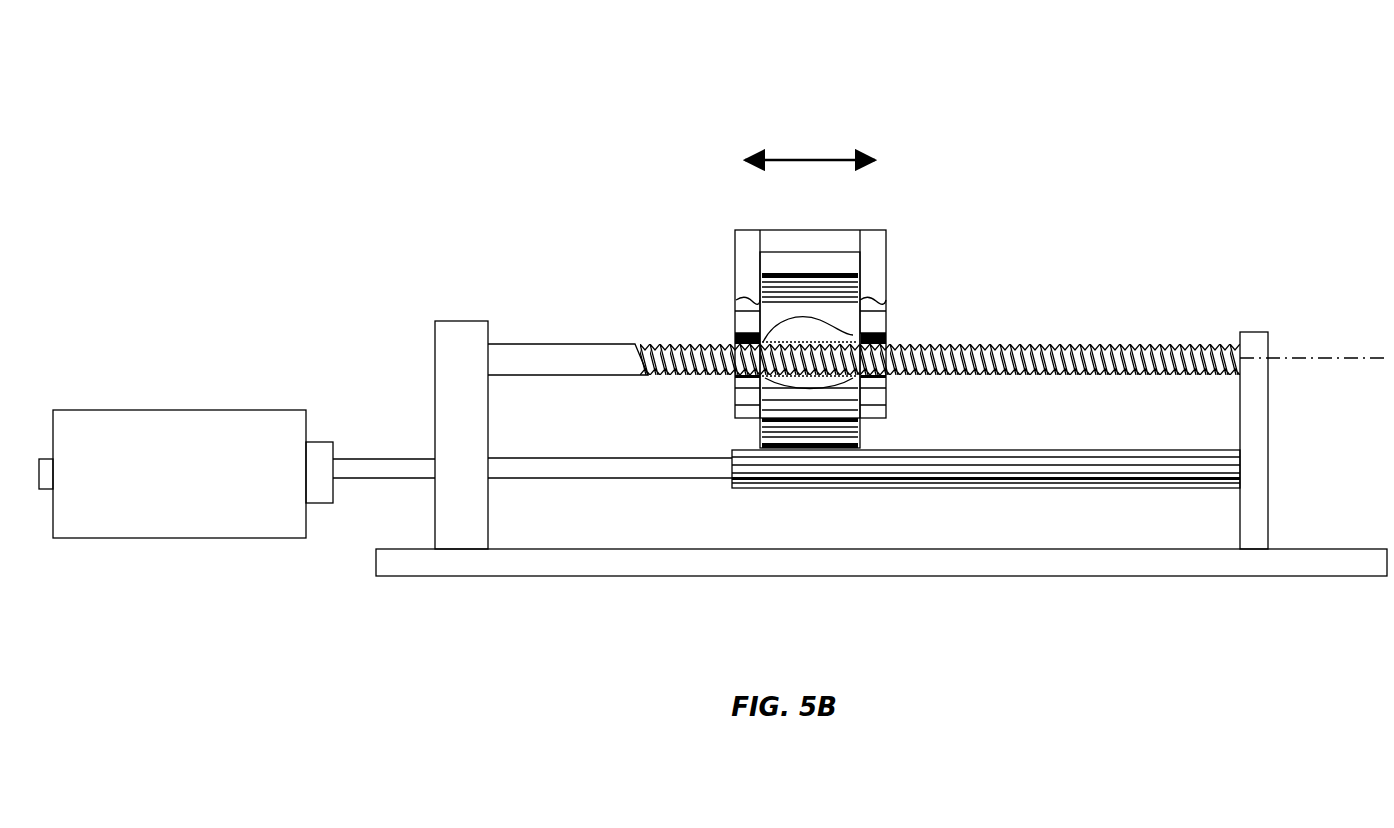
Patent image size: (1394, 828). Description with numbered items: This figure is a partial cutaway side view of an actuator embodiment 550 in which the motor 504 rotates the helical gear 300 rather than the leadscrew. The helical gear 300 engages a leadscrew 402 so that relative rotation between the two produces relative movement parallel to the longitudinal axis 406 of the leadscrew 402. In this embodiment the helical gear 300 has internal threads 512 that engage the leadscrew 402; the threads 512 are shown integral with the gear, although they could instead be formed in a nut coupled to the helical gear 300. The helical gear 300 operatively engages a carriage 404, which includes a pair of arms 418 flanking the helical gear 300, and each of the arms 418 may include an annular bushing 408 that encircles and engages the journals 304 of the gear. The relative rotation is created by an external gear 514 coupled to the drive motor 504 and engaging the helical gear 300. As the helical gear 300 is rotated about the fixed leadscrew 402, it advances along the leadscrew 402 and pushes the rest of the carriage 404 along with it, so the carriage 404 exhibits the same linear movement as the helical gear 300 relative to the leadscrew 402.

The embodiment 550 is at (335, 203).
The helical gear 300 is at (790, 268).
The journals 304 is at (735, 380).
The leadscrew 402 is at (1153, 345).
The carriage 404 is at (847, 230).
The longitudinal axis 406 is at (1313, 357).
The annular bushing 408 is at (735, 332).
The arms 418 is at (735, 297).
The motor 504 is at (176, 539).
The internal threads 512 is at (820, 326).
The external gear 514 is at (992, 490).